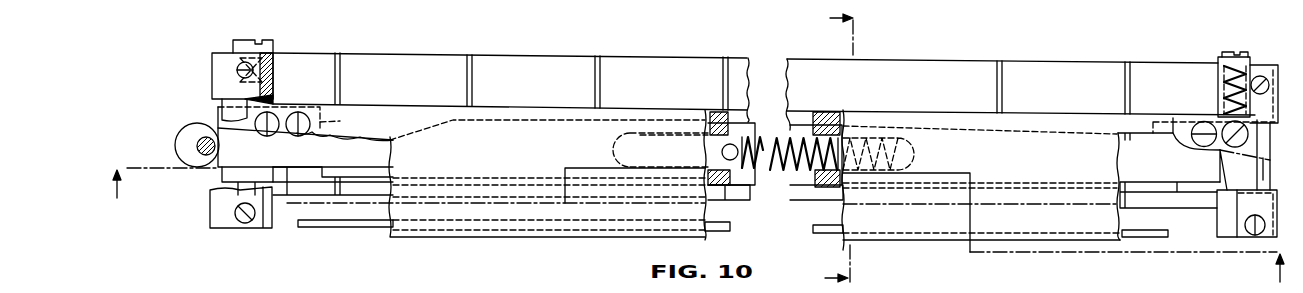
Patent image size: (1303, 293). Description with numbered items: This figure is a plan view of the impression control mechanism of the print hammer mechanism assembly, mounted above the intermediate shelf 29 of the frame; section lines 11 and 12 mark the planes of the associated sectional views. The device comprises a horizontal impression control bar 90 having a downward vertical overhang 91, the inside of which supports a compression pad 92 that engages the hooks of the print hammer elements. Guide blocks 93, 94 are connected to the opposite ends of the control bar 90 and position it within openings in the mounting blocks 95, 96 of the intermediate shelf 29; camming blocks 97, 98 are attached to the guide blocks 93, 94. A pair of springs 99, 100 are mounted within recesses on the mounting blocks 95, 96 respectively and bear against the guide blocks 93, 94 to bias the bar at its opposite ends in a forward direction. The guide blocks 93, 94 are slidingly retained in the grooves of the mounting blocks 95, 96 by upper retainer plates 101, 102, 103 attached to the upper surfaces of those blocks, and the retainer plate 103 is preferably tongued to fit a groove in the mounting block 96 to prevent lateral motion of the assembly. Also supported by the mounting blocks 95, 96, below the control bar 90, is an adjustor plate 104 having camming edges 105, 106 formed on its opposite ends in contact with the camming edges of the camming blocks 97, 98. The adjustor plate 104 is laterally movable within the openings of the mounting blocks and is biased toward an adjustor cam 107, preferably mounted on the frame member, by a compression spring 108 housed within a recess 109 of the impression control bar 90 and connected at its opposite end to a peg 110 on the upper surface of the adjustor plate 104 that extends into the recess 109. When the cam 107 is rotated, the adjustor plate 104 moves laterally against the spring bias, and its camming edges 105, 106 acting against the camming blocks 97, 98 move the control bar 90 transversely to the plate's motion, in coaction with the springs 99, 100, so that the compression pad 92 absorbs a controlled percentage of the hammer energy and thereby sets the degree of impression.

The section line 11- 11 is at (702, 214).
The section line 12- 12 is at (852, 148).
The intermediate shelf 29 is at (682, 91).
The impression control bar 90 is at (686, 223).
The downward vertical overhang 91 is at (703, 240).
The compression pad 92 is at (730, 228).
The guide block 93 is at (1232, 167).
The guide block 94 is at (338, 122).
The mounting block 95 is at (1270, 140).
The mounting block 96 is at (218, 115).
The camming block 97 is at (1163, 142).
The camming block 98 is at (242, 128).
The spring 99 is at (1220, 75).
The spring 100 is at (274, 69).
The upper retainer plate 101 is at (1277, 76).
The upper retainer plate 102 is at (1273, 200).
The upper retainer plate 103 is at (215, 57).
The adjustor plate 104 is at (735, 128).
The camming edge 105 is at (1205, 148).
The camming edge 106 is at (285, 135).
The adjustor cam 107 is at (180, 135).
The compression spring 108 is at (756, 142).
The recess 109 is at (902, 151).
The peg 110 is at (730, 152).